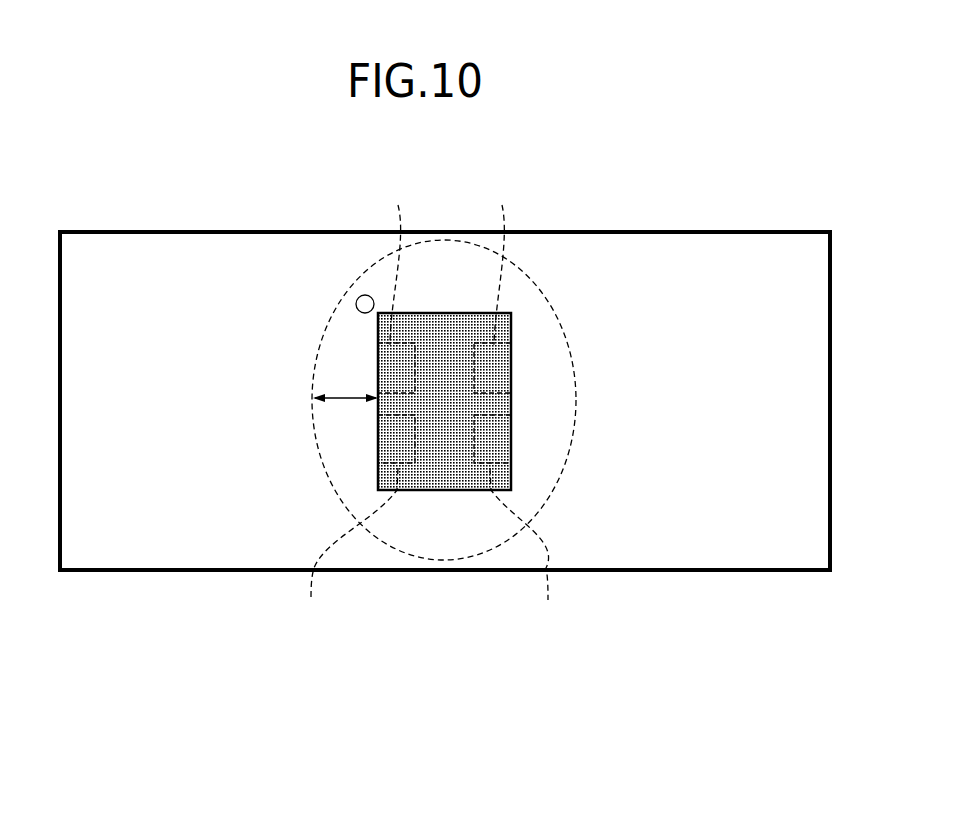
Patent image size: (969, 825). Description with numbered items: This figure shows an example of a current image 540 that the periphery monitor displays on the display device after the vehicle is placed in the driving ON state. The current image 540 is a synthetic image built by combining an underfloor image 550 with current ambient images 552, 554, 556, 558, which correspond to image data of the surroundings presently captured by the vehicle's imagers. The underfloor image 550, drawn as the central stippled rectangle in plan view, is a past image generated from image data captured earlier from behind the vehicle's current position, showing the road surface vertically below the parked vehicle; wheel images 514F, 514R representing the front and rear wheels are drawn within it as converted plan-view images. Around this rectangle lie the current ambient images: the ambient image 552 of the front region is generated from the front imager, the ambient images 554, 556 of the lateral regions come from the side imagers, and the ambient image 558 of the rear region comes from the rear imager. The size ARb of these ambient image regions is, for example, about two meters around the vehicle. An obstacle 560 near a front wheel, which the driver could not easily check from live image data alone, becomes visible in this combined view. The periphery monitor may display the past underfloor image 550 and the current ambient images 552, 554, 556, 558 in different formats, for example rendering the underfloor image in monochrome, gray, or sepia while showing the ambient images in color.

The current image 540 is at (584, 256).
The underfloor image 550 is at (447, 500).
The ambient image of the front region 552 is at (450, 258).
The ambient image of the lateral region 554 is at (336, 373).
The ambient image of the lateral region 556 is at (560, 377).
The ambient image of the rear region 558 is at (479, 547).
The obstacle 560 is at (362, 295).
The front wheel images 514F is at (448, 264).
The rear wheel images 514R is at (431, 545).
The size of the regions of the ambient images ARb is at (345, 413).